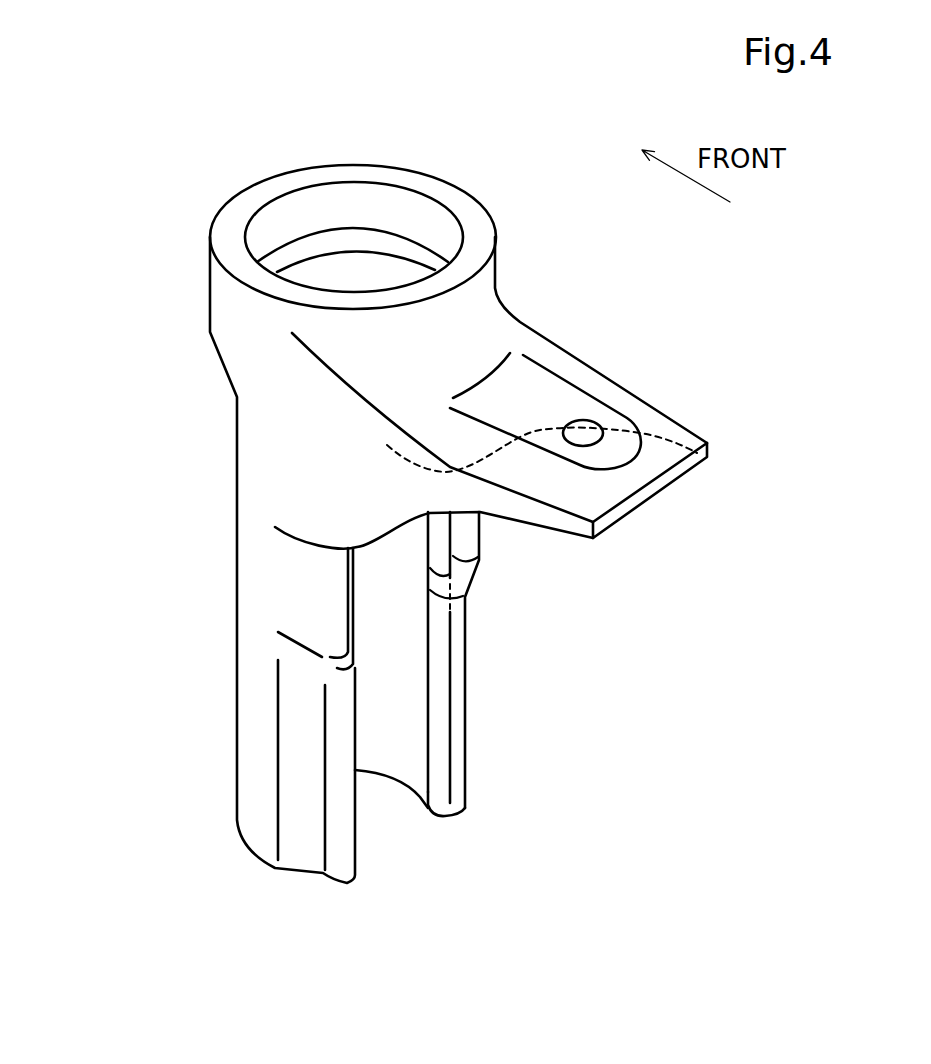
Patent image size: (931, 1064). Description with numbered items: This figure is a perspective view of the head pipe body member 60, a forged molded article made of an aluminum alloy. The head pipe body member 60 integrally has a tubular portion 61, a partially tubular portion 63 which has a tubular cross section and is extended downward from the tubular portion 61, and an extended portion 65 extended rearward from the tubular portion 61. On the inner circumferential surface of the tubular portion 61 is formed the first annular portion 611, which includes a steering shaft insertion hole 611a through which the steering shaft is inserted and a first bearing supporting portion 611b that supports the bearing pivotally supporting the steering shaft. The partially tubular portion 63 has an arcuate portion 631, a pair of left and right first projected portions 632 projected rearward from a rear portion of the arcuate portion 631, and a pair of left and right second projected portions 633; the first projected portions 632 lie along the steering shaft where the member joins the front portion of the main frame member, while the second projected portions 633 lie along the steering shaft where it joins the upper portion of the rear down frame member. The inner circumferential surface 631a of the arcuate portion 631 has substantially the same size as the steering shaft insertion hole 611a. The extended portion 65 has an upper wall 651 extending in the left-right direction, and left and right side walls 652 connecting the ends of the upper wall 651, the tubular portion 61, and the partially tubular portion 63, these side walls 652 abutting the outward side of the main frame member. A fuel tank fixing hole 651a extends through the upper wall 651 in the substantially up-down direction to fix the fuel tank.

The head pipe body member 60 is at (213, 121).
The tubular portion 61 is at (330, 163).
The first annular portion 611 is at (531, 82).
The steering shaft insertion hole 611a is at (391, 267).
The first bearing supporting portion 611b is at (372, 197).
The partially tubular portion 63 is at (237, 665).
The arcuate portion 631 is at (257, 762).
The inner circumferential surface 631a is at (389, 754).
The first projected portion 632 is at (470, 532).
The second projected portion 633 is at (457, 783).
The extended portion 65 is at (547, 337).
The upper wall 651 is at (667, 433).
The fuel tank fixing hole 651a is at (581, 420).
The side wall 652 is at (375, 487).